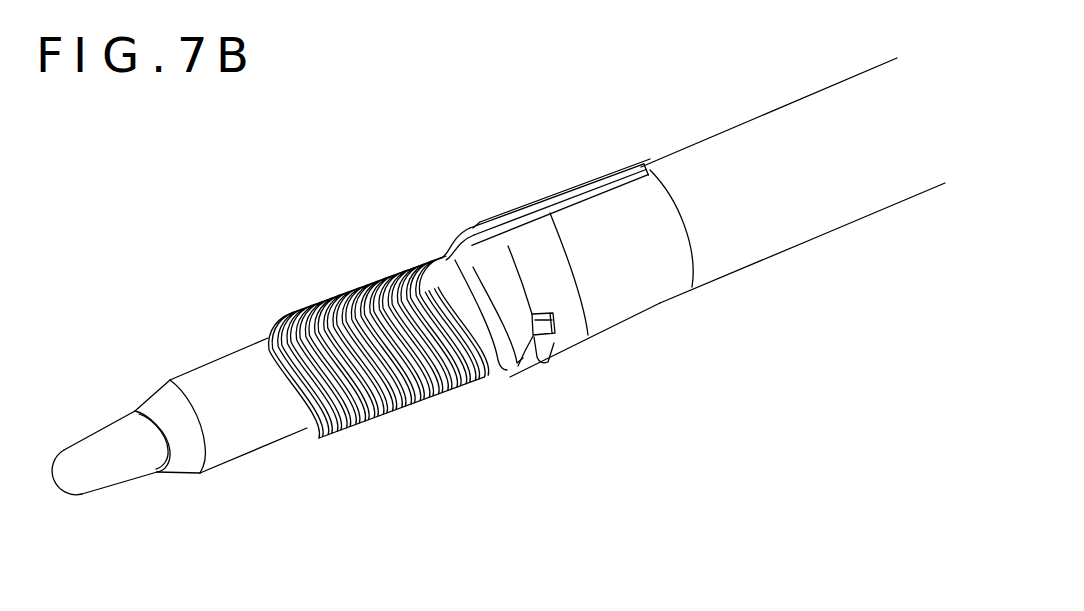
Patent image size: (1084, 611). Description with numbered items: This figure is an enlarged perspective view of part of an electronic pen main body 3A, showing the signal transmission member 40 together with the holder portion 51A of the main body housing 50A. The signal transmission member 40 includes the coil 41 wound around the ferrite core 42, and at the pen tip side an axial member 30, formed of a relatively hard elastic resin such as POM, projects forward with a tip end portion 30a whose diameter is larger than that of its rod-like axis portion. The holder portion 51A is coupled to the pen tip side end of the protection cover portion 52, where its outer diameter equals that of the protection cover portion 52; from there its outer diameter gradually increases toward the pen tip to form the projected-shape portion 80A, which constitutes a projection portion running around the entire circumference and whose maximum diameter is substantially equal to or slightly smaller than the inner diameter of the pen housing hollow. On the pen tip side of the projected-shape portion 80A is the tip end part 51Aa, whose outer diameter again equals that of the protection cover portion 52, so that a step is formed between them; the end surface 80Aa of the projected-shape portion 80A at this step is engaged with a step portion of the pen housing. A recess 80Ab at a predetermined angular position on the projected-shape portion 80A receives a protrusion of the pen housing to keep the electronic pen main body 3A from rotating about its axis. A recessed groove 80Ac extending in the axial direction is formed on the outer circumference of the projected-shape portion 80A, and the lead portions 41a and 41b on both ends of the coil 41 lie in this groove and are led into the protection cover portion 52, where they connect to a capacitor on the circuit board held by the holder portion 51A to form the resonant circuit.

The electronic pen main body 3A is at (708, 120).
The axial member 30 is at (126, 466).
The tip end portion 30a is at (68, 470).
The signal transmission member 40 is at (318, 238).
The coil 41 is at (313, 303).
The lead portion 41a is at (491, 222).
The lead portion 41b is at (516, 212).
The ferrite core 42 is at (256, 362).
The main body housing 50A is at (912, 254).
The holder portion 51A is at (665, 286).
The tip end part 51Aa is at (521, 350).
The protection cover portion 52 is at (833, 217).
The projected-shape portion 80A is at (568, 337).
The end surface 80Aa is at (525, 368).
The recess 80Ab is at (548, 362).
The recessed groove 80Ac is at (618, 182).